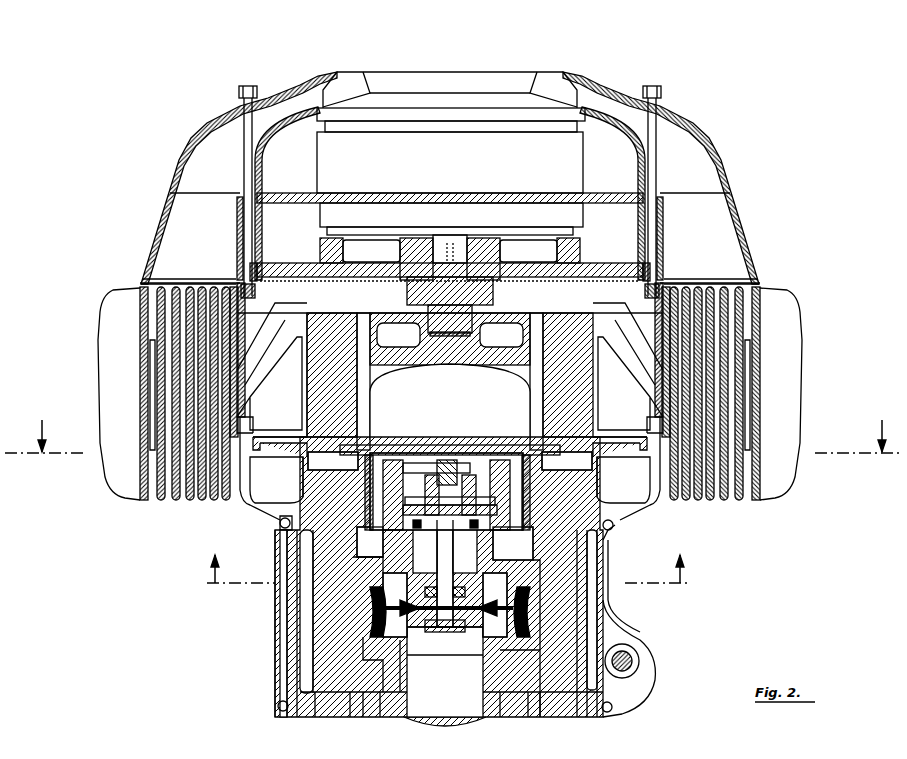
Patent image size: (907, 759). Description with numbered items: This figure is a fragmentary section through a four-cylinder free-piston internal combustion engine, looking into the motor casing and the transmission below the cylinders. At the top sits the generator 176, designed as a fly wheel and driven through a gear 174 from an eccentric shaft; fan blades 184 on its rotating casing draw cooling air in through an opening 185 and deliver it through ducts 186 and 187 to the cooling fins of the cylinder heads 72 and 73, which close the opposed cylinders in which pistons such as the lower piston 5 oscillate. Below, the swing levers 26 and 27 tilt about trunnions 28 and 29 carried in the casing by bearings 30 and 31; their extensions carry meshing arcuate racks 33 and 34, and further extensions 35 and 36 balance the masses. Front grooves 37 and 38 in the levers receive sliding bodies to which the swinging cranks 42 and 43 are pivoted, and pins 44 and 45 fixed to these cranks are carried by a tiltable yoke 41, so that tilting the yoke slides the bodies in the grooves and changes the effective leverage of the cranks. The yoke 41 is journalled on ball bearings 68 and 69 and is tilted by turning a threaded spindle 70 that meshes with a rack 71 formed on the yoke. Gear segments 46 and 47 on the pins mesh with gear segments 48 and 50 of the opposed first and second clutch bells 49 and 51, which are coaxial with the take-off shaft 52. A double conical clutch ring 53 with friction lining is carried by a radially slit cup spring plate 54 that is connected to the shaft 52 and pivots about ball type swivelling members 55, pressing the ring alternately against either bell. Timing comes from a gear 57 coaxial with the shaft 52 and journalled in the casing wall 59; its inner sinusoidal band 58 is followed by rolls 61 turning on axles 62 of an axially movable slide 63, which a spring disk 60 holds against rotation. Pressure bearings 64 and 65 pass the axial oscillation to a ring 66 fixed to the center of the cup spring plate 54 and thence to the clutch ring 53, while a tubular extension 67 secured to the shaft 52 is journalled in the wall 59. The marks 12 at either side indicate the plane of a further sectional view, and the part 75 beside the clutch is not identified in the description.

The lower piston 5 is at (446, 569).
The section line 12- 12 is at (452, 449).
The swing lever 26 is at (520, 445).
The swing lever 27 is at (378, 440).
The trunnion 28 is at (553, 330).
The trunnion 29 is at (328, 330).
The bearing 30 is at (537, 377).
The bearing 31 is at (365, 375).
The arcuate rack 33 is at (510, 460).
The arcuate rack 34 is at (393, 450).
The extension 35 is at (612, 455).
The extension 36 is at (268, 450).
The front groove 37 is at (585, 470).
The front groove 38 is at (320, 463).
The yoke 41 is at (295, 645).
The swinging crank 42 is at (313, 487).
The swinging crank 43 is at (590, 487).
The pin 44 is at (323, 605).
The pin 45 is at (545, 570).
The gear segment 46 is at (375, 543).
The gear segment 47 is at (505, 660).
The gear segment 48 is at (385, 553).
The first clutch bell 49 is at (535, 570).
The gear segment 50 is at (470, 690).
The second clutch bell 51 is at (368, 655).
The take-off shaft 52 is at (410, 717).
The clutch ring 53 is at (505, 585).
The cup spring plate 54 is at (485, 602).
The swivelling members 55 is at (398, 615).
The gear 57 is at (407, 460).
The sinusoidal band 58 is at (472, 524).
The wall 59 is at (495, 470).
The spring disk 60 is at (425, 470).
The rolls 61 is at (421, 524).
The axles 62 is at (455, 460).
The slide 63 is at (440, 590).
The pressure bearing 64 is at (458, 590).
The pressure bearing 65 is at (455, 640).
The ring 66 is at (418, 600).
The tubular extension 67 is at (449, 575).
The ball bearing 68 is at (279, 523).
The ball bearing 69 is at (277, 706).
The threaded spindle 70 is at (632, 662).
The rack 71 is at (638, 678).
The cylinder head 72 is at (117, 478).
The cylinder head 73 is at (782, 465).
The crank web cavity 75 is at (492, 615).
The gear 174 is at (425, 292).
The generator 176 is at (520, 148).
The fan blades 184 is at (348, 85).
The opening 185 is at (462, 73).
The duct 186 is at (695, 160).
The duct 187 is at (190, 155).